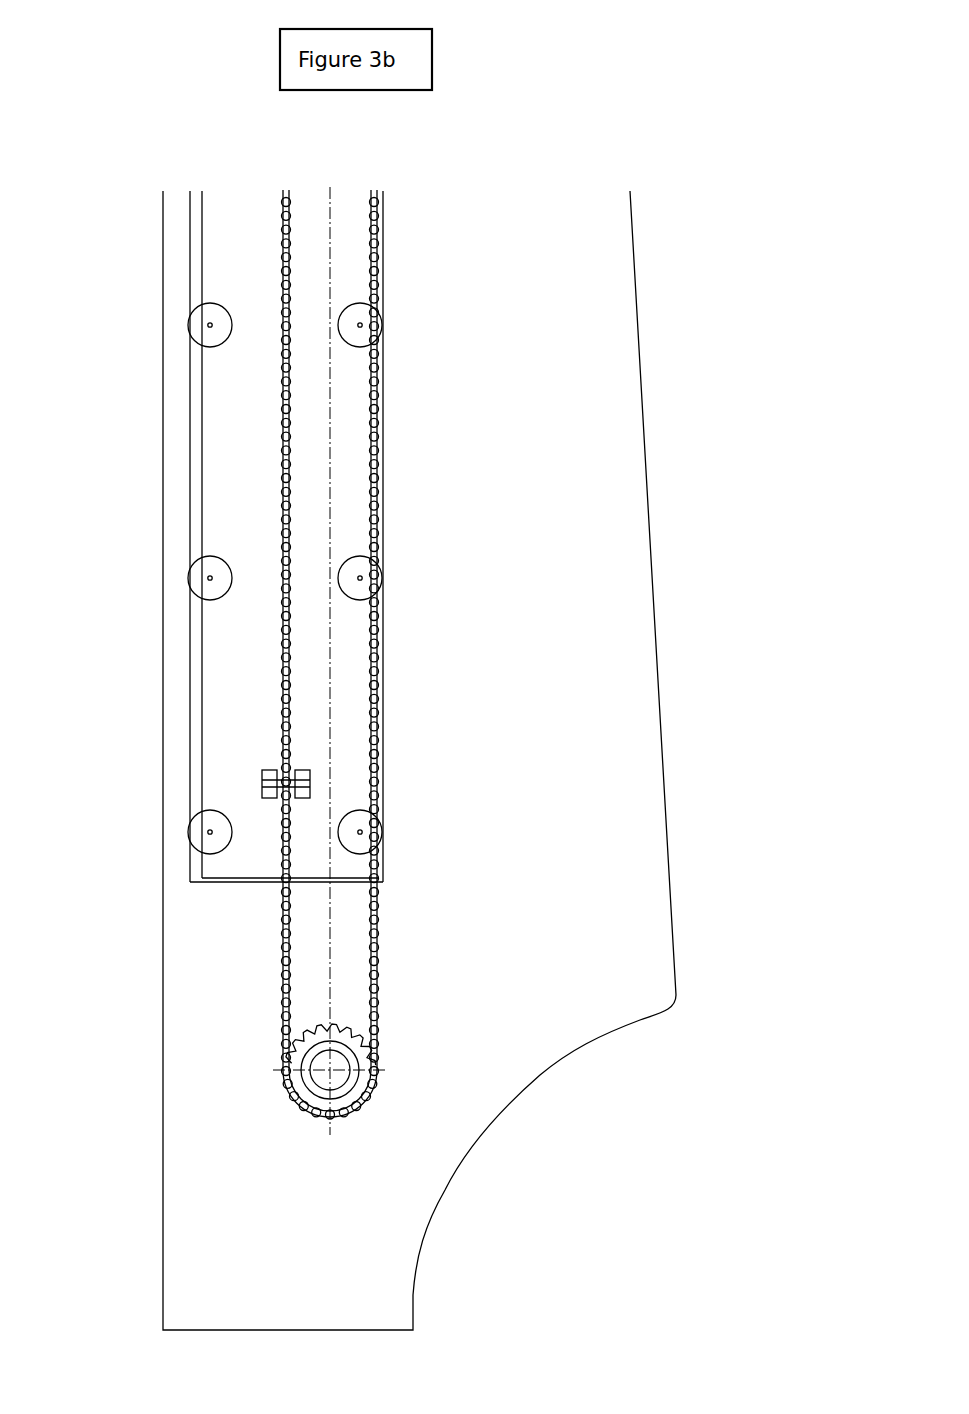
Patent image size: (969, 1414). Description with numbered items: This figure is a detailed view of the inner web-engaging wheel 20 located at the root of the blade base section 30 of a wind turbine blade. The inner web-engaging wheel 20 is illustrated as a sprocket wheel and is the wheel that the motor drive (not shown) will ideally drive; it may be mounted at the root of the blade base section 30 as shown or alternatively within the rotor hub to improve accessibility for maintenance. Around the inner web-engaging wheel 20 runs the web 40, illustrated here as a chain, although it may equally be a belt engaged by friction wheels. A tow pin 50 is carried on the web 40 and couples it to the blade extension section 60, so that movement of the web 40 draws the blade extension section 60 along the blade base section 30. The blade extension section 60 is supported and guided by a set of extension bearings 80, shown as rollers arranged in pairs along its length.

The inner web-engaging wheel 20 is at (272, 1055).
The blade base section 30 is at (652, 316).
The web 40 is at (390, 994).
The tow pin 50 is at (322, 768).
The blade extension section 60 is at (189, 463).
The extension bearings 80 is at (180, 816).